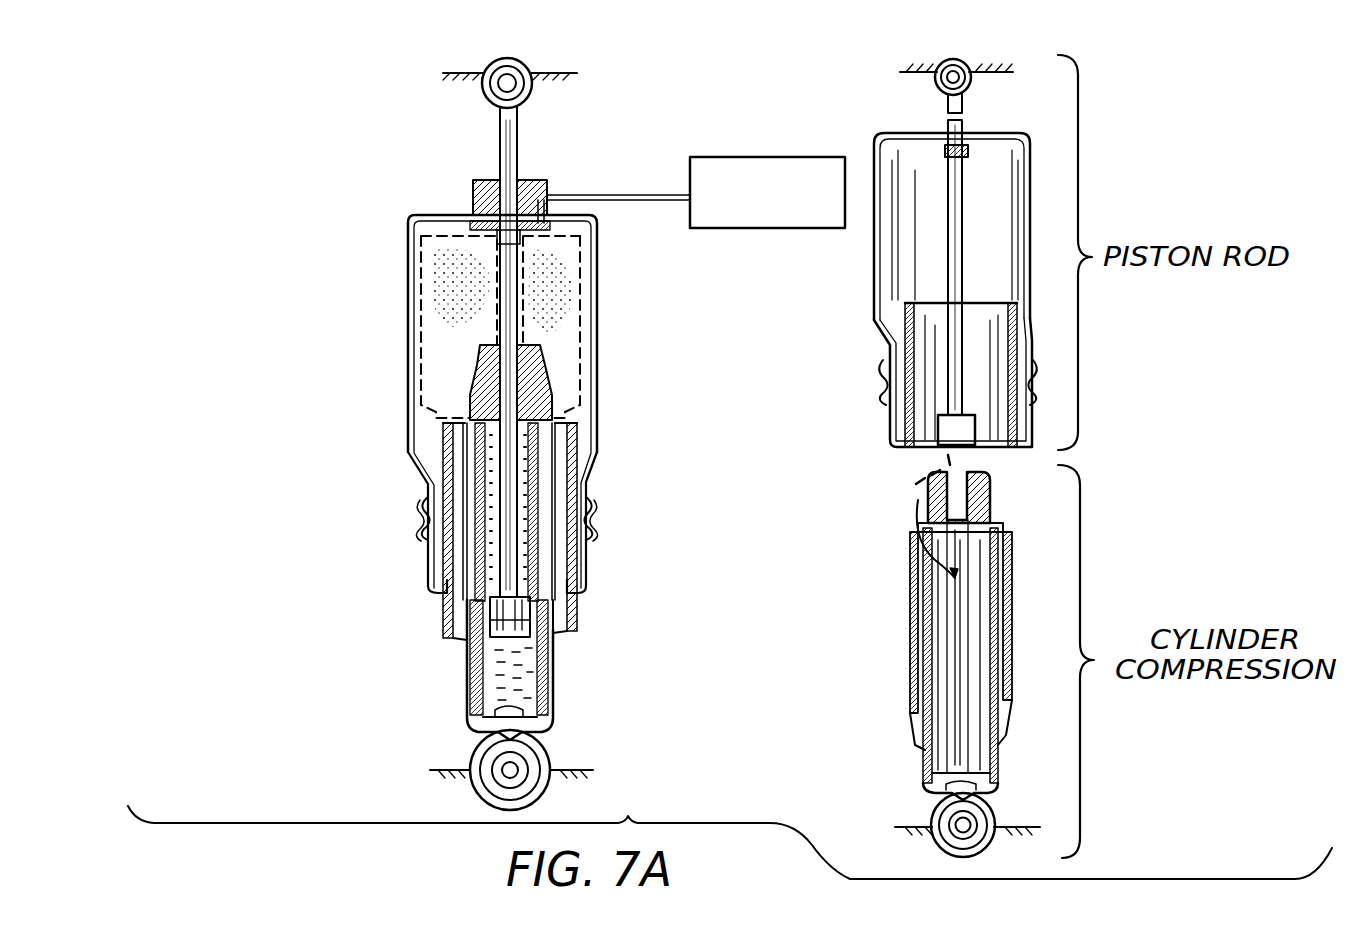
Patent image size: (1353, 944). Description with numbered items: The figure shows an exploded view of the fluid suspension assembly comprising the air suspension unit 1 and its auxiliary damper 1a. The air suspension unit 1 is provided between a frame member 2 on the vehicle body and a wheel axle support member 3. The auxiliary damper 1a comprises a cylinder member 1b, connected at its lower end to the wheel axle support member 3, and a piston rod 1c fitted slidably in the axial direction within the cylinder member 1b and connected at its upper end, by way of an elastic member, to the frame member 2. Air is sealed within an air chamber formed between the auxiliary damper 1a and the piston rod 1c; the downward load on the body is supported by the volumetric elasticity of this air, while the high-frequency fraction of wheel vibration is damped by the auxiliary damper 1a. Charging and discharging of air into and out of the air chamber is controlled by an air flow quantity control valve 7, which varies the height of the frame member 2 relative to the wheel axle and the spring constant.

The air suspension unit 1 is at (400, 357).
The auxiliary damper 1a is at (545, 380).
The cylinder member 1b is at (470, 685).
The piston rod 1c is at (506, 290).
The frame member 2 is at (557, 77).
The wheel axle support member 3 is at (566, 772).
The air flow quantity control valve 7 is at (768, 160).